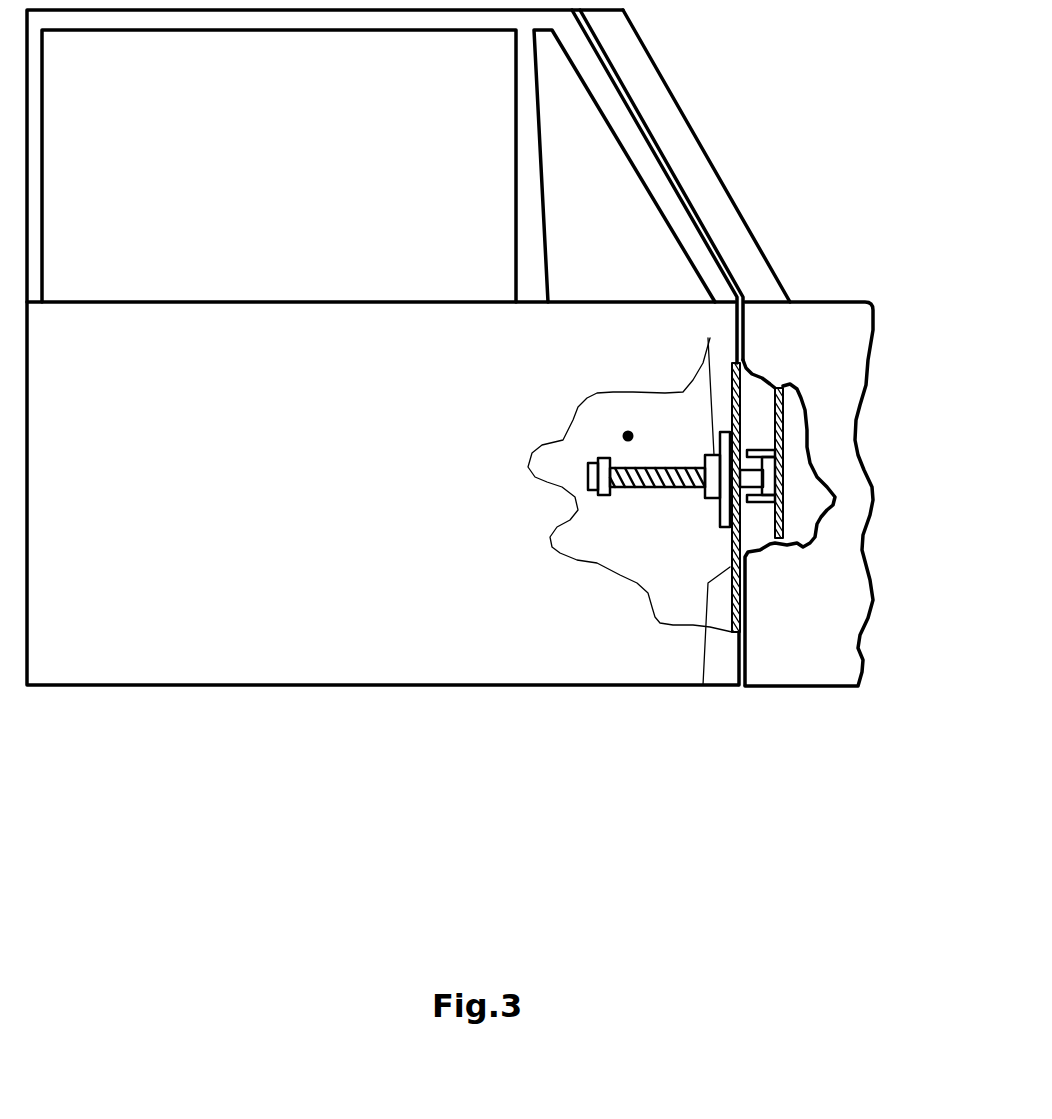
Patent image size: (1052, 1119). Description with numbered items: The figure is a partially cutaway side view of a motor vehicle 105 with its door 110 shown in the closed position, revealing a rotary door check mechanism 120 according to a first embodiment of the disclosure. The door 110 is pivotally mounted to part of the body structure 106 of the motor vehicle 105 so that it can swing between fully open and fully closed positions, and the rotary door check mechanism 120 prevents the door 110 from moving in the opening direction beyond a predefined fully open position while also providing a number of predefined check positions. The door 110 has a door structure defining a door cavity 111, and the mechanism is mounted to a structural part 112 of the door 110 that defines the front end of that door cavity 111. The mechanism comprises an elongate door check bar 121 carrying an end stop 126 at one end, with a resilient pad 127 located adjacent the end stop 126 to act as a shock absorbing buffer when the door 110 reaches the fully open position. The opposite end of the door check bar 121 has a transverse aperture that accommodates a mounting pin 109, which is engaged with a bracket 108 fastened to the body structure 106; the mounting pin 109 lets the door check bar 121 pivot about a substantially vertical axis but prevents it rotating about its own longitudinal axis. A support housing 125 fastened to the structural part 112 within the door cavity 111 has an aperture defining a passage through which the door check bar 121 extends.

The motor vehicle 105 is at (713, 165).
The body structure 106 is at (783, 408).
The bracket 108 is at (758, 497).
The mounting pin 109 is at (786, 460).
The door 110 is at (208, 685).
The door cavity 111 is at (628, 436).
The structural part 112 is at (708, 583).
The rotary door check mechanism 120 is at (648, 488).
The door check bar 121 is at (662, 487).
The support housing 125 is at (708, 338).
The end stop 126 is at (590, 492).
The resilient pad 127 is at (606, 493).